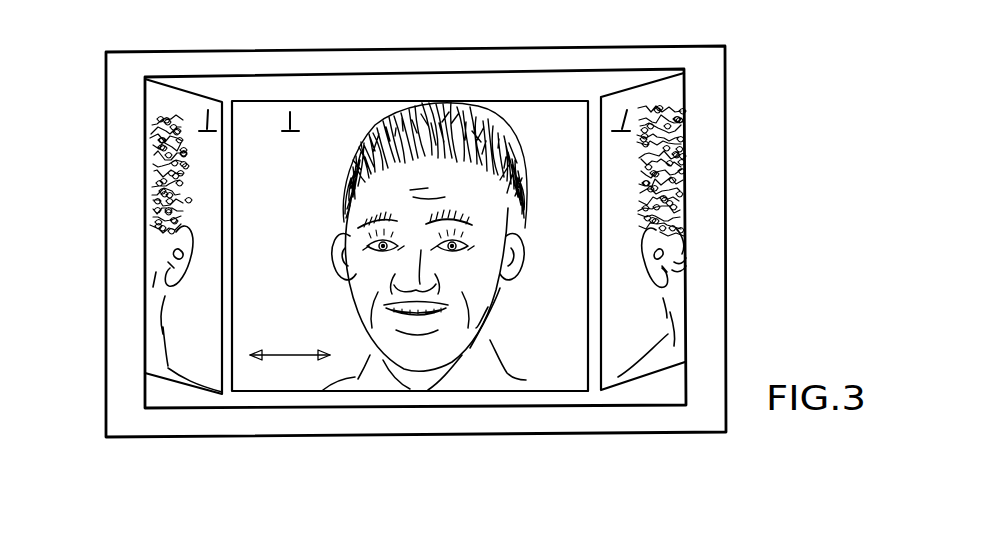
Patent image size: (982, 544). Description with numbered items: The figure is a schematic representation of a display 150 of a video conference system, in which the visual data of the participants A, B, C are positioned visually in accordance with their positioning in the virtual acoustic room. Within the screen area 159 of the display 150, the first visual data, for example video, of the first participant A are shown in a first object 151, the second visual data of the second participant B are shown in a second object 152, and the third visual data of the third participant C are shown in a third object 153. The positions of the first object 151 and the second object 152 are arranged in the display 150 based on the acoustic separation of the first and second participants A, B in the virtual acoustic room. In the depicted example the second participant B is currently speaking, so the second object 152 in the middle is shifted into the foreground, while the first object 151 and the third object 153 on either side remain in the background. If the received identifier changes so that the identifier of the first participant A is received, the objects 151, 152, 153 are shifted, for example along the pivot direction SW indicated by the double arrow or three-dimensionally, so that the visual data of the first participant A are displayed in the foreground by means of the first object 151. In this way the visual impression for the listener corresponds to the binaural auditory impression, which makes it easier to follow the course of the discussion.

The display 150 is at (728, 158).
The screen area 159 is at (170, 415).
The first object 151 is at (207, 126).
The second object 152 is at (290, 126).
The third object 153 is at (625, 118).
The first participant A is at (168, 125).
The second participant B is at (501, 136).
The third participant C is at (655, 118).
The pivot direction SW is at (288, 351).